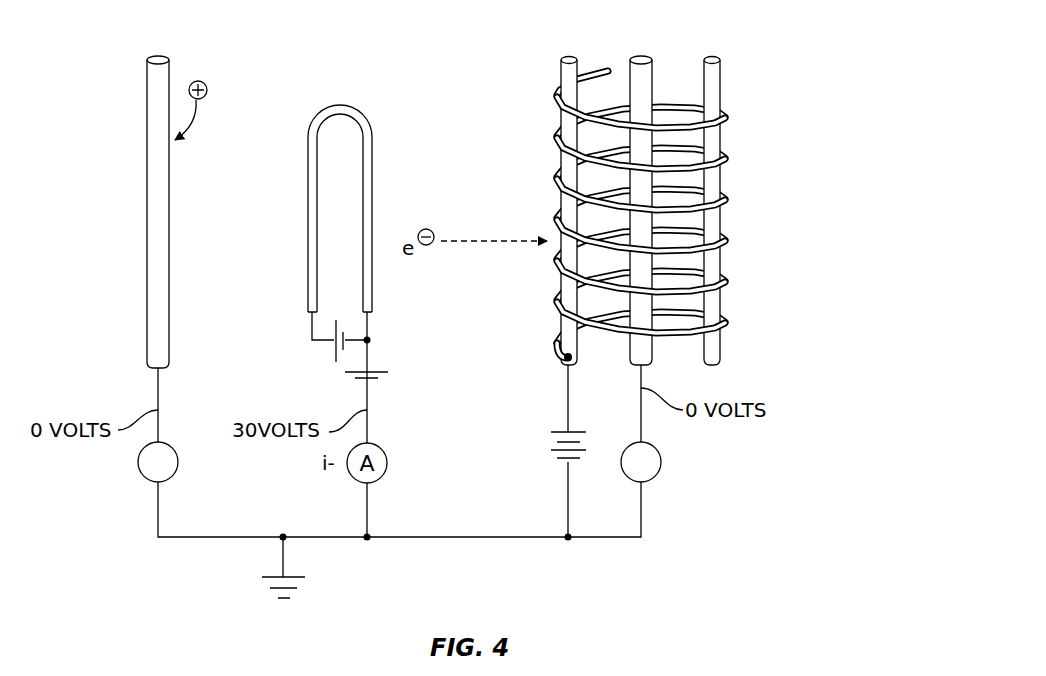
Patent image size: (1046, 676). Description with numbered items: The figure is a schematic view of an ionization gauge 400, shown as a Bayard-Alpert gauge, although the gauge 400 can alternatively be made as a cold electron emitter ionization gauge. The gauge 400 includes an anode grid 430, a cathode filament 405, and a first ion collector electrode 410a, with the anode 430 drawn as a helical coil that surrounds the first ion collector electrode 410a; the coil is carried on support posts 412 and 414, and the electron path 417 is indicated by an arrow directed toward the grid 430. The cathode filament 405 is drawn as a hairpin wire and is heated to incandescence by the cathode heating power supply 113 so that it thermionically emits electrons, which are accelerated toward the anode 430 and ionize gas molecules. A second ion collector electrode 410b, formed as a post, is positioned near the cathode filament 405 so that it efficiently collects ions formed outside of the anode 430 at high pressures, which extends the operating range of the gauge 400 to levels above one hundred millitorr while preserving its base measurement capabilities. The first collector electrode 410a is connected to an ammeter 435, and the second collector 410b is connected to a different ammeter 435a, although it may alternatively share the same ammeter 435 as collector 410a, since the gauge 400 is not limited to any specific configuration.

The Bayard-Alpert ionization gauge 400 is at (808, 38).
The second ion collector electrode 410b is at (148, 130).
The cathode filament 405 is at (308, 212).
The cathode heating power supply 113 is at (336, 364).
The ammeter 435a is at (178, 462).
The electron path arrow 417 is at (459, 327).
The grid support rod 412 is at (569, 58).
The first ion collector electrode 410a is at (641, 57).
The grid support rod 414 is at (712, 58).
The anode grid 430 is at (674, 222).
The ammeter 435 is at (661, 462).